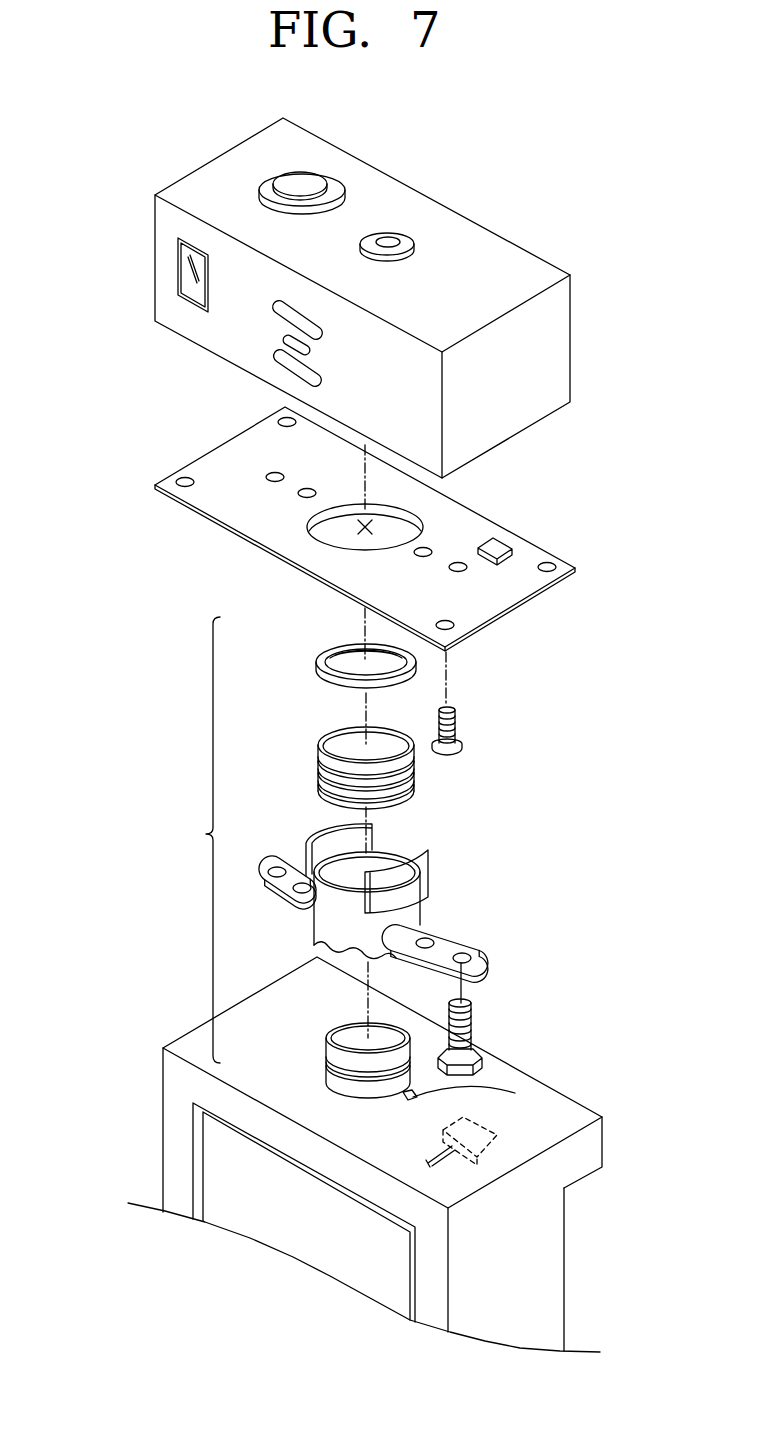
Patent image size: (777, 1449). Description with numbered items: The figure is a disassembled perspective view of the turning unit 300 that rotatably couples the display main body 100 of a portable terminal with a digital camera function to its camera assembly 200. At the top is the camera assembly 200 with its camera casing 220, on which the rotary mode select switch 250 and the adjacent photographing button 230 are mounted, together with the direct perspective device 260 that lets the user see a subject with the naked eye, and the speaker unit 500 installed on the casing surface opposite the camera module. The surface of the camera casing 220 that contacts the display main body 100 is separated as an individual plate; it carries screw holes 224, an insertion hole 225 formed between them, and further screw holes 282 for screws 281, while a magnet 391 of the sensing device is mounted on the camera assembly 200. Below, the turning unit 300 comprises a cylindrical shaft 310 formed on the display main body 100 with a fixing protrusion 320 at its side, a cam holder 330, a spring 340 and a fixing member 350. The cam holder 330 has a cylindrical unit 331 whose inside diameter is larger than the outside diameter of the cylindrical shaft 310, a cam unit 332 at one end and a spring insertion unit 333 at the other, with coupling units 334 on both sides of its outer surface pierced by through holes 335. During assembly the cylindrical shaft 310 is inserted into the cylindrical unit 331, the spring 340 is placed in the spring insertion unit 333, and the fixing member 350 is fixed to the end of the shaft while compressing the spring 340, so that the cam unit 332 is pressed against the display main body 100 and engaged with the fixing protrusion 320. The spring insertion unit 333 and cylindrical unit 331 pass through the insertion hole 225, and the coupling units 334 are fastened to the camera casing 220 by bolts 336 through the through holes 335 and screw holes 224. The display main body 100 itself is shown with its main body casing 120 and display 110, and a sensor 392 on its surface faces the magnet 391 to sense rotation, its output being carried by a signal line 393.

The display main body 100 is at (403, 1154).
The display 110 is at (223, 1163).
The main body casing 120 is at (174, 1096).
The camera assembly 200 is at (600, 268).
The camera casing 220 is at (523, 557).
The screw holes 224 is at (423, 550).
The insertion hole 225 is at (347, 525).
The photographing button 230 is at (393, 236).
The mode select switch 250 is at (312, 182).
The direct perspective device 260 is at (176, 270).
The screws 281 is at (473, 733).
The screw holes 282 is at (286, 420).
The turning unit 300 is at (206, 834).
The cylindrical shaft 310 is at (315, 1080).
The fixing protrusion 320 is at (515, 1093).
The cam holder 330 is at (405, 884).
The cylindrical unit 331 is at (416, 915).
The cam unit 332 is at (312, 957).
The spring insertion unit 333 is at (346, 848).
The coupling units 334 is at (294, 870).
The through holes 335 is at (465, 957).
The bolts 336 is at (489, 1018).
The spring 340 is at (308, 757).
The fixing member 350 is at (306, 662).
The magnet 391 is at (506, 560).
The sensor 392 is at (497, 1145).
The signal line 393 is at (450, 1148).
The speaker unit 500 is at (263, 336).